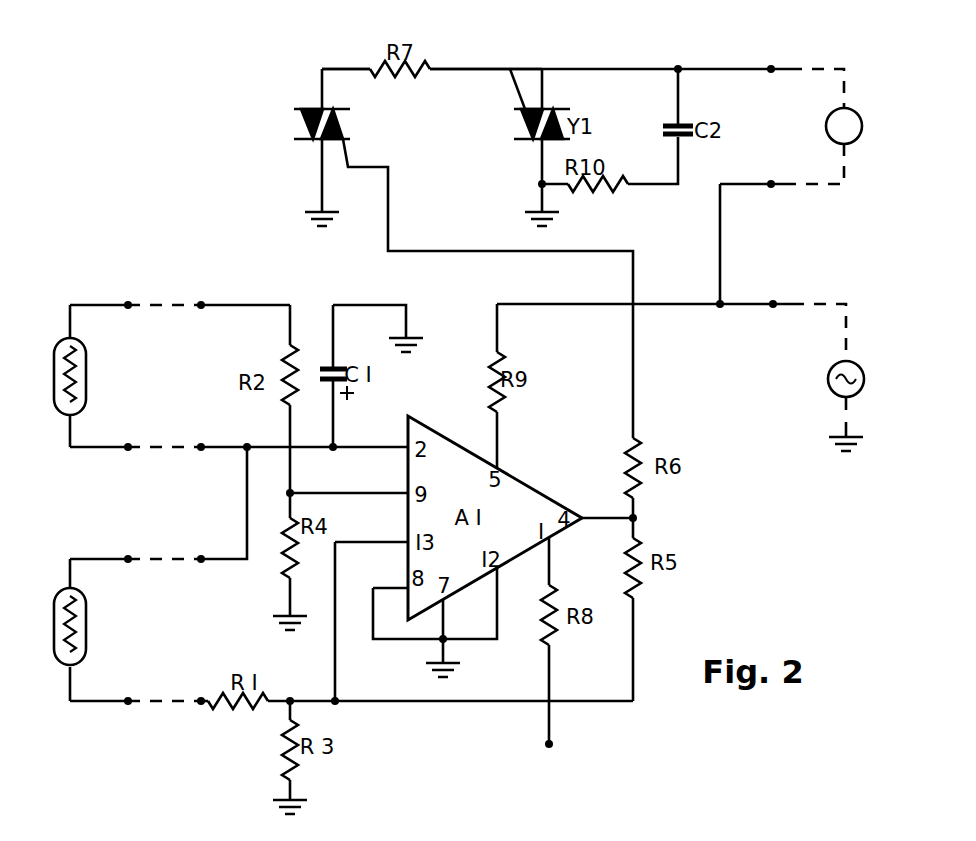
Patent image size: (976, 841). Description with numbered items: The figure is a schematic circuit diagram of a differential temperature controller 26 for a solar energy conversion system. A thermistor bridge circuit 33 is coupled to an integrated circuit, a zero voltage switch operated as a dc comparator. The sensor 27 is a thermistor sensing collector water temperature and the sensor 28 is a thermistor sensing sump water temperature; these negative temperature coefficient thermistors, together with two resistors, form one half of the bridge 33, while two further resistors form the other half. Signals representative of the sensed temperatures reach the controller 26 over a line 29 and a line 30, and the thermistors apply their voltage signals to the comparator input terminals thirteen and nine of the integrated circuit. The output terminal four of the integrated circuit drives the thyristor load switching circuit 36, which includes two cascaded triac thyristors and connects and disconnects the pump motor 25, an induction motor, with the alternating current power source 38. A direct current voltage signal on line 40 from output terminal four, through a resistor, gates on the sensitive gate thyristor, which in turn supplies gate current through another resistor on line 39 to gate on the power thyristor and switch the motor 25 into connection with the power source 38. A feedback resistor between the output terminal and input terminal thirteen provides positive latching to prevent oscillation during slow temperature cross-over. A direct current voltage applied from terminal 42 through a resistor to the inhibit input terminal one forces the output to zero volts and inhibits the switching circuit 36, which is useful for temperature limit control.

The pump motor 25 is at (857, 112).
The electrical controller 26 is at (660, 514).
The sensor 27 is at (54, 658).
The sensor 28 is at (56, 390).
The line 29 is at (245, 305).
The line 30 is at (206, 705).
The thermistor bridge circuit 33 is at (124, 292).
The thyristor load switching circuit 36 is at (262, 132).
The alternating current power source 38 is at (859, 366).
The line 39 is at (455, 70).
The line 40 is at (388, 214).
The terminal 42 is at (553, 744).